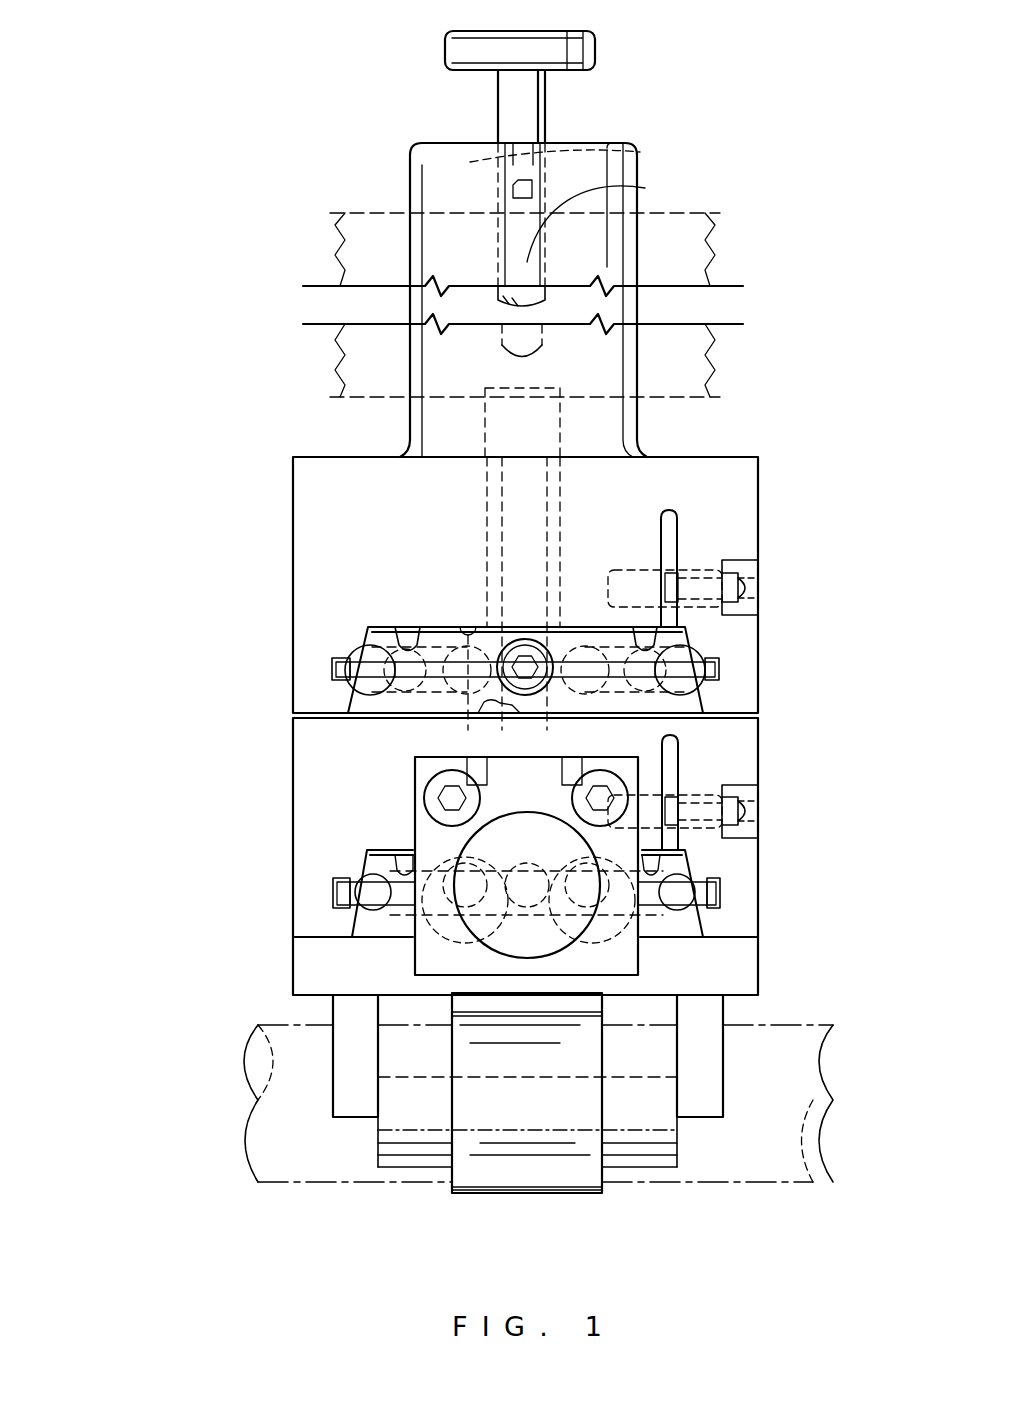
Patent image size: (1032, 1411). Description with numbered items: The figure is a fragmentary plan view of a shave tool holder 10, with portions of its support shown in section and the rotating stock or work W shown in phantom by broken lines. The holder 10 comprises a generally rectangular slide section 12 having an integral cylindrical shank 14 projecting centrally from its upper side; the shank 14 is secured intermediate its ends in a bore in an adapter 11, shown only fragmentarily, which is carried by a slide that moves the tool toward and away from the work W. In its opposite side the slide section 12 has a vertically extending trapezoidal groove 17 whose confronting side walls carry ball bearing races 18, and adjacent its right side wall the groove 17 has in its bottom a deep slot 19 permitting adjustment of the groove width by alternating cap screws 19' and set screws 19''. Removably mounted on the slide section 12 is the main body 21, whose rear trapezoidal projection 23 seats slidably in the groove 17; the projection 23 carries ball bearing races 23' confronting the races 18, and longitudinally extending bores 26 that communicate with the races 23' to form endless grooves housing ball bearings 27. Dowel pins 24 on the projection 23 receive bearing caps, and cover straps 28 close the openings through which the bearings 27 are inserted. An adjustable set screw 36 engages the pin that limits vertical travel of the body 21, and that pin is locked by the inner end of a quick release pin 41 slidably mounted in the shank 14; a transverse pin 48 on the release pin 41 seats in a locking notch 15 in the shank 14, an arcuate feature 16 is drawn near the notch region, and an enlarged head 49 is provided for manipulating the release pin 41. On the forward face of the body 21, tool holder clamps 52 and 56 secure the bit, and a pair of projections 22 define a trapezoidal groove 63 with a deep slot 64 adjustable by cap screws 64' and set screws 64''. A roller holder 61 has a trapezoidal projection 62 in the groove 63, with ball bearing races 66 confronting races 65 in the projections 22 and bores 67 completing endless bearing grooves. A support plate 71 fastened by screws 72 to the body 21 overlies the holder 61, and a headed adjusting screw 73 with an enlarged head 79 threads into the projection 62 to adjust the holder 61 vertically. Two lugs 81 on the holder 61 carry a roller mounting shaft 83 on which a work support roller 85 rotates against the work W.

The shave tool holder 10 is at (238, 576).
The adapter 11 is at (732, 337).
The slide section 12 is at (293, 510).
The shank 14 is at (432, 183).
The locking notch 15 is at (505, 165).
The arcuate slot 16 is at (608, 217).
The slot or groove 17 is at (468, 625).
The ball bearing races 18 is at (340, 672).
The deep slot 19 is at (708, 509).
The cap screws 19' is at (712, 524).
The set screws 19'' is at (782, 553).
The main body 21 is at (293, 808).
The projections 22 is at (305, 912).
The projection 23 is at (443, 732).
The ball bearing races 23' is at (539, 742).
The dowel pins 24 is at (588, 790).
The bores 26 is at (400, 648).
The ball bearings 27 is at (345, 645).
The cover straps 28 is at (408, 628).
The adjustable set screw 36 is at (525, 638).
The quick release pin 41 is at (546, 118).
The pin 48 is at (640, 152).
The head 49 is at (458, 52).
The tool holder clamp 52 is at (345, 1120).
The tool holder clamp 56 is at (708, 1105).
The roller holder 61 is at (293, 980).
The projection 62 is at (678, 930).
The groove or recess 63 is at (365, 850).
The deep slot 64 is at (696, 792).
The cap screws 64' is at (721, 802).
The set screws 64'' is at (794, 816).
The ball bearing race 65 is at (340, 870).
The ball bearing races 66 is at (407, 940).
The bores 67 is at (528, 913).
The support plate 71 is at (540, 789).
The screws 72 is at (462, 790).
The adjusting screw 73 is at (505, 868).
The head 79 is at (545, 941).
The lugs 81 is at (402, 1162).
The roller mounting shaft 83 is at (500, 1135).
The work support roller 85 is at (535, 1176).
The work W is at (285, 1180).